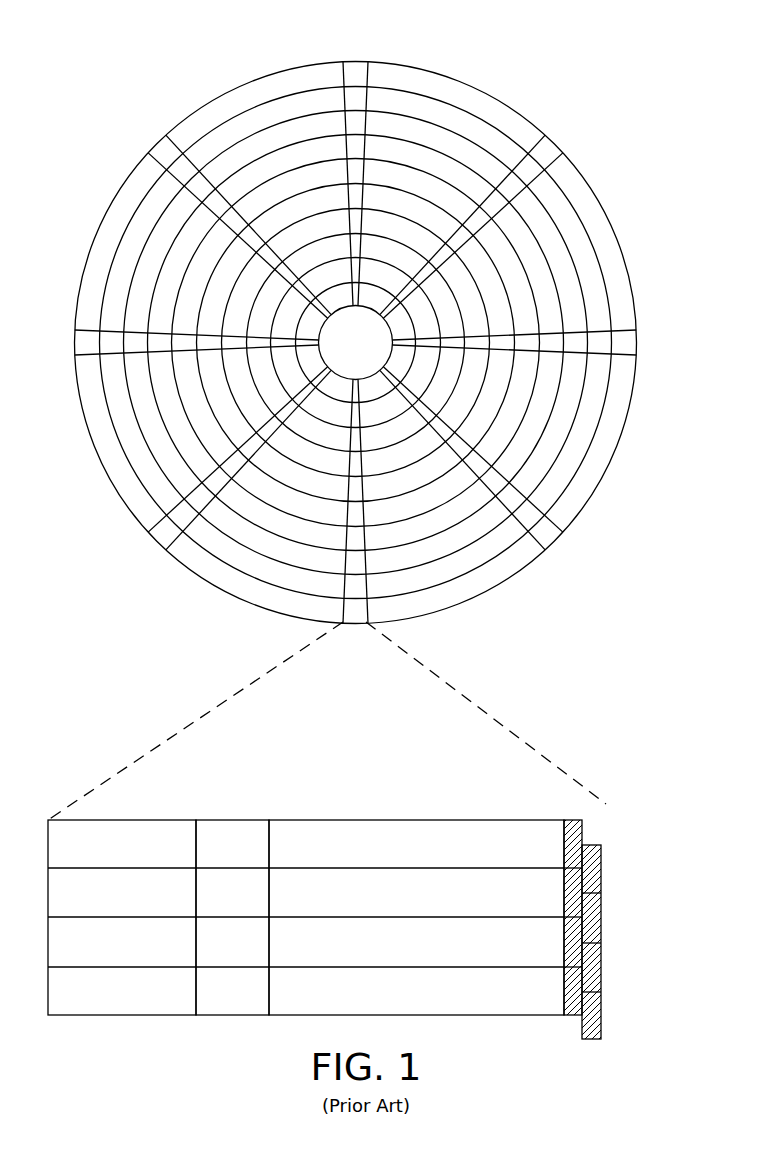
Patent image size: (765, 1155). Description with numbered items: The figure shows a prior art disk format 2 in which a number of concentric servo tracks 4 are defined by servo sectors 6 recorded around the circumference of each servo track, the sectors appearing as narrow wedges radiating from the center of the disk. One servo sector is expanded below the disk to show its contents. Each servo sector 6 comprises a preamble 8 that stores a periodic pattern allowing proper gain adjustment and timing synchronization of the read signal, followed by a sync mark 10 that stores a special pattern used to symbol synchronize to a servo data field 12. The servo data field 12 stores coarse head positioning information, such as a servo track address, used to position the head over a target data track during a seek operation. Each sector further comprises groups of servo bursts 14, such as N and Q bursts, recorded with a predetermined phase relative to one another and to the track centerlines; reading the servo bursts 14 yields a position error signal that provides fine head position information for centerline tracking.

The disk format 2 is at (146, 64).
The servo track 4 is at (450, 118).
The servo sectors 6 is at (356, 351).
The preamble 8 is at (127, 820).
The sync mark 10 is at (234, 820).
The servo data field 12 is at (403, 820).
The servo bursts 14 is at (598, 818).